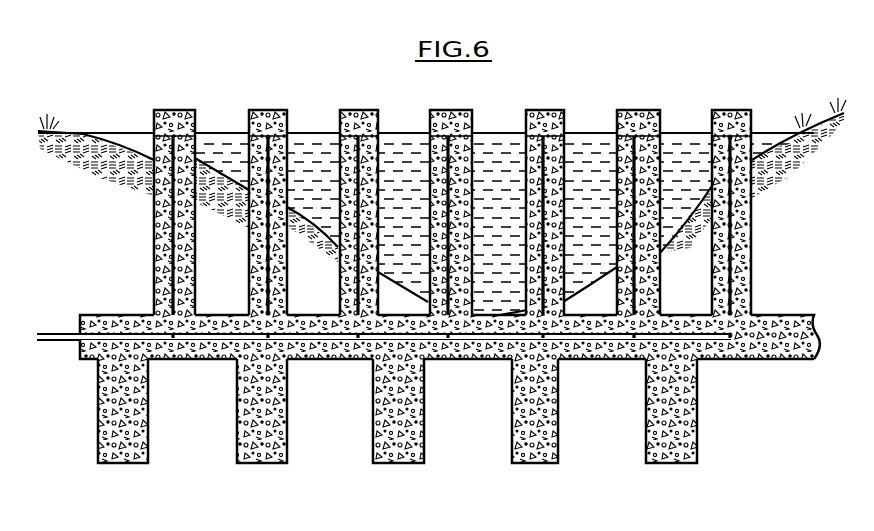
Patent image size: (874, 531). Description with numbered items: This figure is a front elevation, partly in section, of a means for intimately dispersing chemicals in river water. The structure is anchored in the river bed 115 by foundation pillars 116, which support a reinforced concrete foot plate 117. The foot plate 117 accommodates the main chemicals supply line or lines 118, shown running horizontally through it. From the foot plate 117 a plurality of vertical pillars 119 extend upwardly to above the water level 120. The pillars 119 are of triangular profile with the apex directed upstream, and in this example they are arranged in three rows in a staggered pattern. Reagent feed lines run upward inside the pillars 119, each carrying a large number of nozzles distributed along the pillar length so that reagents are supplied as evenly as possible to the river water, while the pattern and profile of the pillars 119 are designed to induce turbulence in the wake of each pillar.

The river bed 115 is at (417, 320).
The foundation pillars 116 is at (237, 448).
The reinforced concrete foot plate 117 is at (92, 359).
The main chemicals supply line 118 is at (37, 342).
The vertical pillars 119 is at (450, 110).
The water level 120 is at (580, 132).